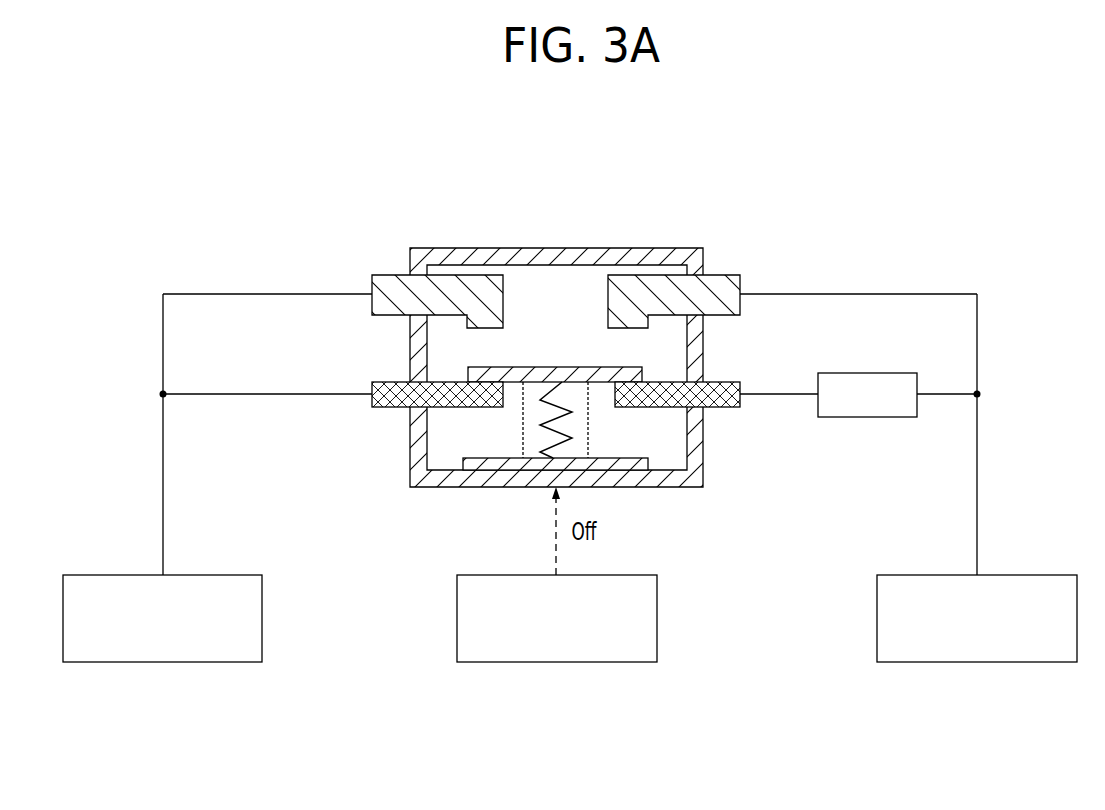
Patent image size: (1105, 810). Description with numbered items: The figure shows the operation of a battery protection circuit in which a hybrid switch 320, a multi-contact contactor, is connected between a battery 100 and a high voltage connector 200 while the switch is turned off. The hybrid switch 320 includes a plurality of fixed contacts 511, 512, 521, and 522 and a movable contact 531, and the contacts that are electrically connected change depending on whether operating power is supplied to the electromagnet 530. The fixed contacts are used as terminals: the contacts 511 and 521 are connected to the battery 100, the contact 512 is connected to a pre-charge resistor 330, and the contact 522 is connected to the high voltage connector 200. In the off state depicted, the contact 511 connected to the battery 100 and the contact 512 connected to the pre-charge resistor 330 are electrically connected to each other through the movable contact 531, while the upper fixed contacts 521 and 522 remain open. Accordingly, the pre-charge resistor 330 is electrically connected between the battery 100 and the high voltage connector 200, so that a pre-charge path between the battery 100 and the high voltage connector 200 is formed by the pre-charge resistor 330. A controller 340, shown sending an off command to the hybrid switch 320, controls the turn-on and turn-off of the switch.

The battery 100 is at (163, 665).
The high voltage connector 200 is at (975, 665).
The hybrid switch 320 is at (647, 242).
The pre-charge resistor 330 is at (865, 420).
The controller 340 is at (556, 665).
The fixed contact 511 is at (371, 385).
The fixed contact 512 is at (742, 383).
The fixed contact 521 is at (372, 277).
The fixed contact 522 is at (741, 277).
The electromagnet 530 is at (590, 434).
The movable contact 531 is at (553, 365).